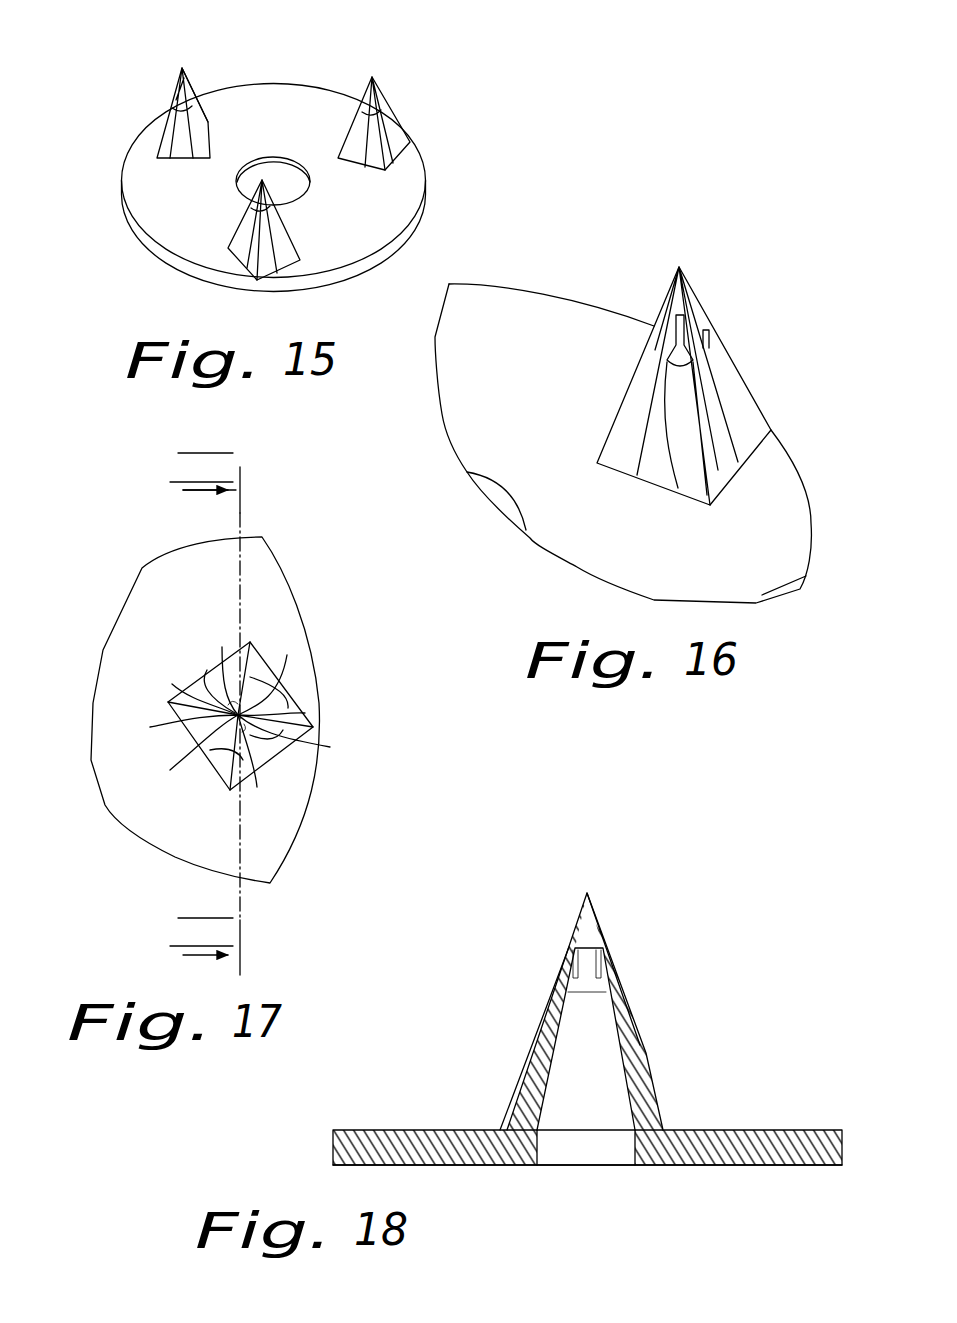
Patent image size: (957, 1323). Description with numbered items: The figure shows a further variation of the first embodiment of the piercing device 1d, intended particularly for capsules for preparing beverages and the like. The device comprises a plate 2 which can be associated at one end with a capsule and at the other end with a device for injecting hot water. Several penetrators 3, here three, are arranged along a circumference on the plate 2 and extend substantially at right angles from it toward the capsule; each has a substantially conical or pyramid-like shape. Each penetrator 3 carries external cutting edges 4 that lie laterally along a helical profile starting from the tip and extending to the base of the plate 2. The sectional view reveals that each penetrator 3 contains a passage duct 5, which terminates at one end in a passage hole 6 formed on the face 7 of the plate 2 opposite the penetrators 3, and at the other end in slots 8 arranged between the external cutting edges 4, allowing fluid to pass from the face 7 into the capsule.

In FIG. 15, the piercing device 1d is at (121, 114).
In FIG. 15, the plate 2 is at (289, 80).
In FIG. 16, the plate 2 is at (579, 292).
In FIG. 17, the plate 2 is at (297, 583).
In FIG. 18, the plate 2 is at (735, 1128).
In FIG. 15, the penetrator 3 is at (183, 163).
In FIG. 16, the penetrator 3 is at (677, 495).
In FIG. 17, the penetrator 3 is at (200, 673).
In FIG. 18, the penetrator 3 is at (533, 1028).
In FIG. 16, the external cutting edge 4 is at (676, 277).
In FIG. 17, the external cutting edge 4 is at (238, 710).
In FIG. 18, the external cutting edge 4 is at (625, 983).
In FIG. 18, the passage duct 5 is at (548, 1075).
In FIG. 18, the passage hole 6 is at (632, 1139).
In FIG. 15, the face 7 is at (145, 248).
In FIG. 16, the face 7 is at (810, 574).
In FIG. 18, the face 7 is at (753, 1167).
In FIG. 16, the slot 8 is at (701, 326).
In FIG. 17, the slot 8 is at (230, 710).
In FIG. 18, the slot 8 is at (573, 957).